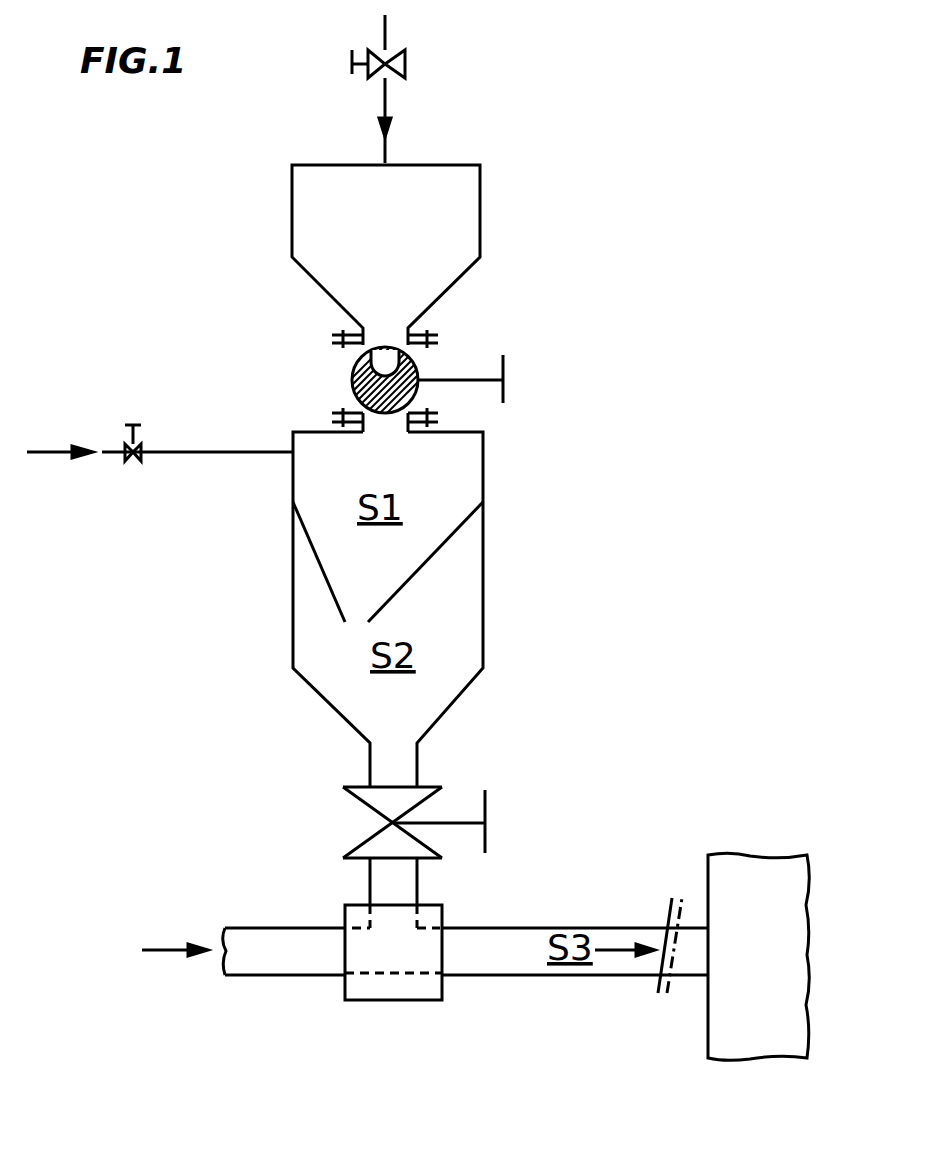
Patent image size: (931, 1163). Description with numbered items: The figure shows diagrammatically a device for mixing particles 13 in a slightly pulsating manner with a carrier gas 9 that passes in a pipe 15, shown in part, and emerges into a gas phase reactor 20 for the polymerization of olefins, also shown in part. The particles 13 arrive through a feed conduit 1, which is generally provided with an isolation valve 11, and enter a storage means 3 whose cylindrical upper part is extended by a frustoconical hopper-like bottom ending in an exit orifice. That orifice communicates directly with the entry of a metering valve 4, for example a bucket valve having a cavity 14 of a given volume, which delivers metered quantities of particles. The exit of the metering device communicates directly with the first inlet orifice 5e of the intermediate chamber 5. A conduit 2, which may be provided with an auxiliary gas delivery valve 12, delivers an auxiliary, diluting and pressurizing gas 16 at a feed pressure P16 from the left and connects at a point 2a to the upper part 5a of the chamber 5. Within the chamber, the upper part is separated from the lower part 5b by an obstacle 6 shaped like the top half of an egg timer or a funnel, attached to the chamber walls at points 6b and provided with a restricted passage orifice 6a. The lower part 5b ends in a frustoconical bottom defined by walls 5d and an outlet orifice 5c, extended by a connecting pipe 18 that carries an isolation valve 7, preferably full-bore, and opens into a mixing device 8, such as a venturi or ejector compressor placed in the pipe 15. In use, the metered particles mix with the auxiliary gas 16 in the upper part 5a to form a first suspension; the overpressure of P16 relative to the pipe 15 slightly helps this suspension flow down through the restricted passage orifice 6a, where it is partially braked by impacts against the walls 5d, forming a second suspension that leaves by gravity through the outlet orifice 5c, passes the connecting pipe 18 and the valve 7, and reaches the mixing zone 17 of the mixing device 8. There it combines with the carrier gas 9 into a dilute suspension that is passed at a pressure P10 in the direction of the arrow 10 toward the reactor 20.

The feed conduit 1 is at (387, 103).
The conduit 2 is at (198, 451).
The gas inlet into vessel 2a is at (293, 448).
The storage means 3 is at (482, 196).
The metering valve 4 is at (352, 381).
The intermediate chamber 5 is at (483, 452).
The upper part of the intermediate chamber 5a is at (450, 496).
The lower part of the intermediate chamber 5b is at (457, 644).
The outlet orifice 5c is at (392, 760).
The walls of the chamber 5d is at (320, 700).
The first inlet orifice 5e is at (390, 430).
The obstacle 6 is at (390, 600).
The restricted passage orifice 6a is at (360, 624).
The baffle attachment points 6b is at (293, 503).
The isolation valve 7 is at (388, 801).
The mixing device 8 is at (345, 912).
The carrier gas 9 is at (162, 945).
The arrow 10 is at (620, 977).
The isolation valve 11 is at (405, 68).
The auxiliary gas delivery valve 12 is at (133, 462).
The particles 13 is at (443, 249).
The cavity 14 is at (385, 356).
The pipe 15 is at (515, 977).
The auxiliary gas 16 is at (45, 452).
The mixing zone 17 is at (397, 955).
The connecting pipe 18 is at (417, 766).
The gas phase reactor 20 is at (716, 1033).
The pressure P10 is at (625, 945).
The feed pressure P16 is at (62, 472).